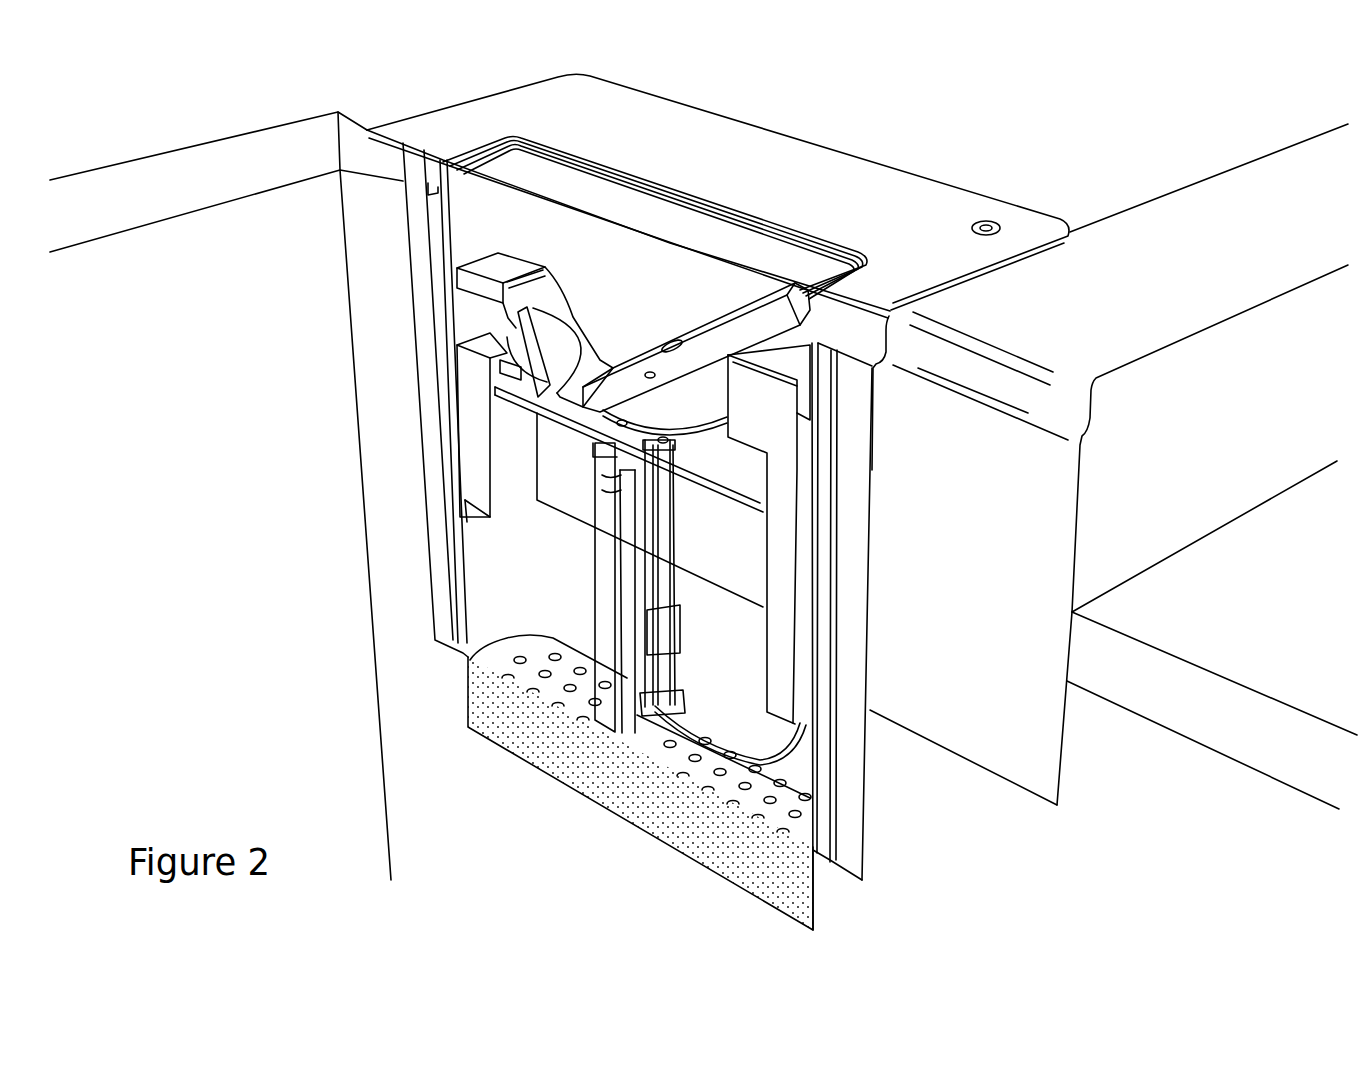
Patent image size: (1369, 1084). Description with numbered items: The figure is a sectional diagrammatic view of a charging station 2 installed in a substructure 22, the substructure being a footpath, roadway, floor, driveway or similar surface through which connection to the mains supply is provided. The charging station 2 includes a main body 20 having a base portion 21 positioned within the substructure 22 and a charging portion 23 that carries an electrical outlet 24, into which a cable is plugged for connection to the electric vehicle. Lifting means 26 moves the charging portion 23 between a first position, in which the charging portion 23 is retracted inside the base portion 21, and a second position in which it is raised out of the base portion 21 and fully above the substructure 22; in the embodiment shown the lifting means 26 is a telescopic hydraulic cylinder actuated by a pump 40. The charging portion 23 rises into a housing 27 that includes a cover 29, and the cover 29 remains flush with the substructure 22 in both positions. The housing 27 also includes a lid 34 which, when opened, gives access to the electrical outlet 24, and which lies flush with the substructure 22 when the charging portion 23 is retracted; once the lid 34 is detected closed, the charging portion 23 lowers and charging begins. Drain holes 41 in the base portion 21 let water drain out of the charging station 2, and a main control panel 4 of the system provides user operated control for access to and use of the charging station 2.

The charging station 2 is at (308, 292).
The main control panel 4 is at (557, 748).
The main body 20 is at (522, 567).
The base portion 21 is at (430, 362).
The substructure 22 is at (205, 560).
The charging portion 23 is at (468, 235).
The electrical outlet 24 is at (550, 323).
The lifting means 26 is at (623, 635).
The housing 27 is at (805, 558).
The cover 29 is at (683, 128).
The lid 34 is at (811, 265).
The pump 40 is at (477, 453).
The drain holes 41 is at (742, 786).